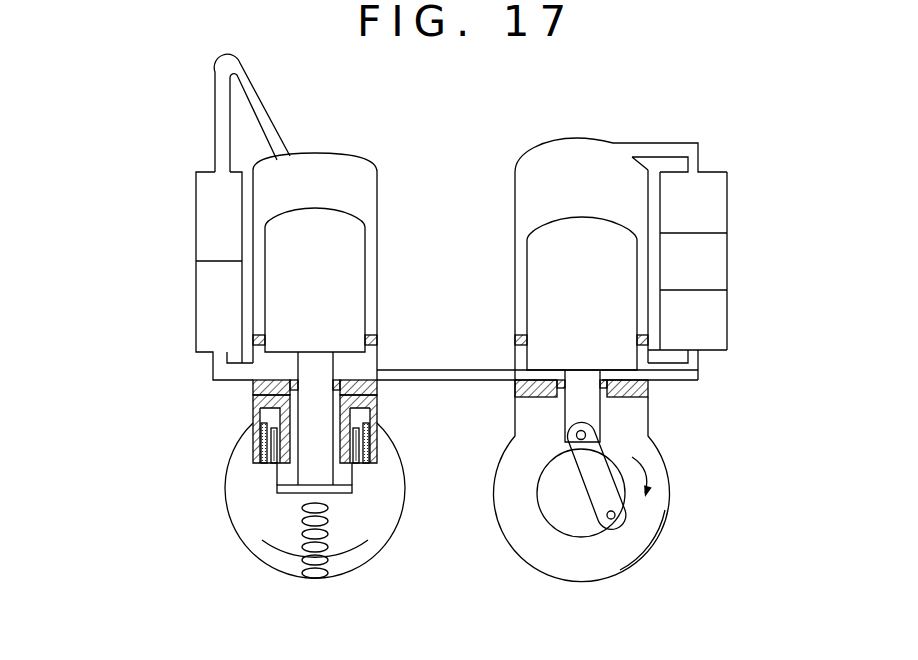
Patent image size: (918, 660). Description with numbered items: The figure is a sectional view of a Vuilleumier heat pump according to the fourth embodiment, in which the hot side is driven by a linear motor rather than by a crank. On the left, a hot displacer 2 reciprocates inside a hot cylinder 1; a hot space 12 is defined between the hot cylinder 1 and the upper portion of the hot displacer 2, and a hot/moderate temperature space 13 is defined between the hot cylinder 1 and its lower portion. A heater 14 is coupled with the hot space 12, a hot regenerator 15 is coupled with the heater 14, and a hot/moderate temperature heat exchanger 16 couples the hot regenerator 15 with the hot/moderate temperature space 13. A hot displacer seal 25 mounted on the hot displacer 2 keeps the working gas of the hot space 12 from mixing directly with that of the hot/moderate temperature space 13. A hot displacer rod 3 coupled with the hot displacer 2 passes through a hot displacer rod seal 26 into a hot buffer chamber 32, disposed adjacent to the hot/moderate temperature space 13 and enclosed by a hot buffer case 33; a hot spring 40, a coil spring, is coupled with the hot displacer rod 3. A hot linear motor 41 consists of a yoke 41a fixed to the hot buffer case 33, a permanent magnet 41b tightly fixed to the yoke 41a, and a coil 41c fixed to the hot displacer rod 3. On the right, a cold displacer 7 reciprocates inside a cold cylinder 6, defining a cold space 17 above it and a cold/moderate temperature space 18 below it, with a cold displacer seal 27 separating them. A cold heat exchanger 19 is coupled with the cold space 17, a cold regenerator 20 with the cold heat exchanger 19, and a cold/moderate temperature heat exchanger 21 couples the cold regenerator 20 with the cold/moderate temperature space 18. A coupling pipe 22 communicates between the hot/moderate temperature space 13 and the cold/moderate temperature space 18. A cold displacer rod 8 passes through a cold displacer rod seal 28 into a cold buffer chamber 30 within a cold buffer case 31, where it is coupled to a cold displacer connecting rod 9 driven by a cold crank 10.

The hot cylinder 1 is at (377, 197).
The hot displacer 2 is at (348, 265).
The hot displacer rod 3 is at (313, 365).
The cold cylinder 6 is at (515, 188).
The cold displacer 7 is at (543, 267).
The cold displacer rod 8 is at (588, 380).
The cold displacer connecting rod 9 is at (595, 477).
The cold crank 10 is at (590, 523).
The hot space 12 is at (352, 173).
The hot/moderate temperature space 13 is at (360, 370).
The heater 14 is at (215, 116).
The hot regenerator 15 is at (205, 218).
The hot/moderate temperature heat exchanger 16 is at (205, 312).
The cold space 17 is at (558, 158).
The cold/moderate temperature space 18 is at (522, 373).
The cold heat exchanger 19 is at (710, 208).
The cold regenerator 20 is at (718, 270).
The cold/moderate temperature heat exchanger 21 is at (718, 333).
The coupling pipe 22 is at (418, 380).
The hot displacer seal 25 is at (377, 332).
The hot displacer rod seal 26 is at (253, 388).
The cold displacer seal 27 is at (702, 353).
The cold displacer rod seal 28 is at (522, 380).
The cold buffer chamber 30 is at (662, 477).
The cold buffer case 31 is at (662, 537).
The hot buffer chamber 32 is at (377, 519).
The hot buffer case 33 is at (288, 577).
The hot spring 40 is at (330, 540).
The hot linear motor 41 is at (218, 554).
The yoke 41a is at (253, 417).
The permanent magnet 41b is at (258, 428).
The coil 41c is at (273, 463).